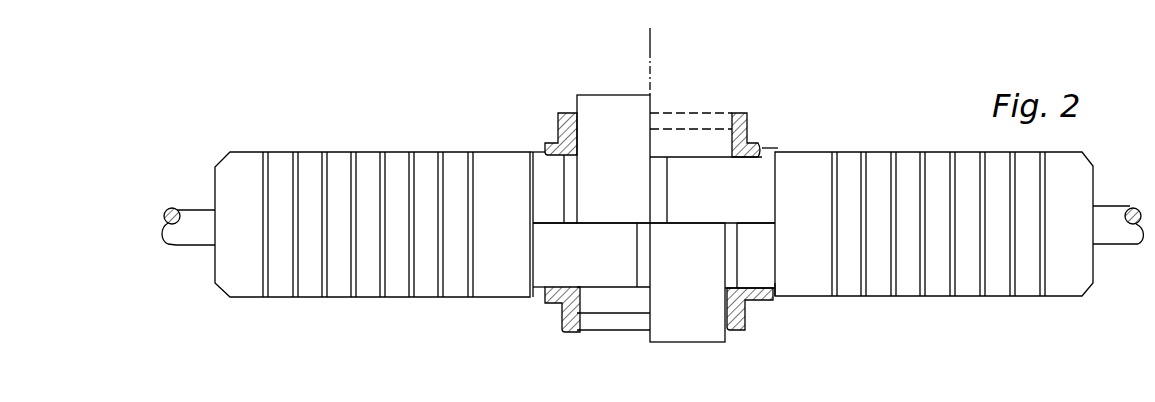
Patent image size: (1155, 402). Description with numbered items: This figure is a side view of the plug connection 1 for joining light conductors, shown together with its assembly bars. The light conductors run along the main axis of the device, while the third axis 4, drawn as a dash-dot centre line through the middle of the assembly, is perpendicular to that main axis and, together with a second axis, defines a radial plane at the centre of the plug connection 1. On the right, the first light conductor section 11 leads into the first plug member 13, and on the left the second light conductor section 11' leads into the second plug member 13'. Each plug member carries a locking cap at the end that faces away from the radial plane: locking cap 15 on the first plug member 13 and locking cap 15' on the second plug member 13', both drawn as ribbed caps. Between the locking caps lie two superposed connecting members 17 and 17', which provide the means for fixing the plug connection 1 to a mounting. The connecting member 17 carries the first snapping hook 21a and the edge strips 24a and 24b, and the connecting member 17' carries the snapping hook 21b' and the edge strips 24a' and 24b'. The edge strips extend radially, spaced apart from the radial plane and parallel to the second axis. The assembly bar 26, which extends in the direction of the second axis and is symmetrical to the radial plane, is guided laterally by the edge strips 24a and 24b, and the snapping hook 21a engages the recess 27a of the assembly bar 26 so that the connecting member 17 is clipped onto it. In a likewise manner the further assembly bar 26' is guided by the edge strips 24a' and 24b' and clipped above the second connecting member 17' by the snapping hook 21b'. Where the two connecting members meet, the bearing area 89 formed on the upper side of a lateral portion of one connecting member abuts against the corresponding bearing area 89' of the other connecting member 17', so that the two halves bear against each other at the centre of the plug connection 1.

The plug connection 1 is at (463, 307).
The third axis 4 is at (651, 43).
The first light conductor section 11 is at (1118, 209).
The second light conductor section 11' is at (188, 251).
The first plug member 13 is at (934, 181).
The second plug member 13' is at (372, 180).
The locking cap 15 is at (938, 197).
The locking cap 15' is at (368, 198).
The connecting member 17 is at (716, 275).
The connecting member 17' is at (661, 196).
The first snapping hook 21a is at (703, 337).
The snapping hook 21b' is at (613, 143).
The edge strip 24a is at (541, 309).
The edge strip 24a' is at (548, 128).
The edge strip 24b is at (811, 306).
The edge strip 24b' is at (799, 135).
The assembly bar 26 is at (751, 318).
The further assembly bar 26' is at (747, 110).
The recess 27a is at (580, 302).
The bearing area 89 is at (771, 233).
The bearing area 89' is at (558, 213).